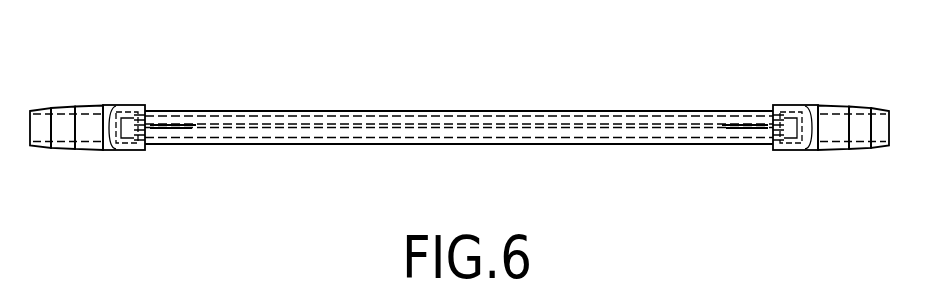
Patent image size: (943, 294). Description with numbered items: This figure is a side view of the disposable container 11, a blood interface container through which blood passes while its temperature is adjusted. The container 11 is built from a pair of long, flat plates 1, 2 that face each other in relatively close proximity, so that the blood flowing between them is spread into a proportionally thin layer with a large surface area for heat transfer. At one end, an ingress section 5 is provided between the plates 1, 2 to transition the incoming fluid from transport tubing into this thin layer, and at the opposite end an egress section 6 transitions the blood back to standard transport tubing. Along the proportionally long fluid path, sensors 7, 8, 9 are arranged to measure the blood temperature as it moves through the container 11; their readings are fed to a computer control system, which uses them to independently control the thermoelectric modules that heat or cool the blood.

The disposable container 11 is at (433, 28).
The plate 1 is at (422, 144).
The plate 2 is at (478, 111).
The ingress section 5 is at (164, 129).
The egress section 6 is at (742, 128).
The sensor 7 is at (188, 124).
The sensor 8 is at (398, 124).
The sensor 9 is at (715, 124).